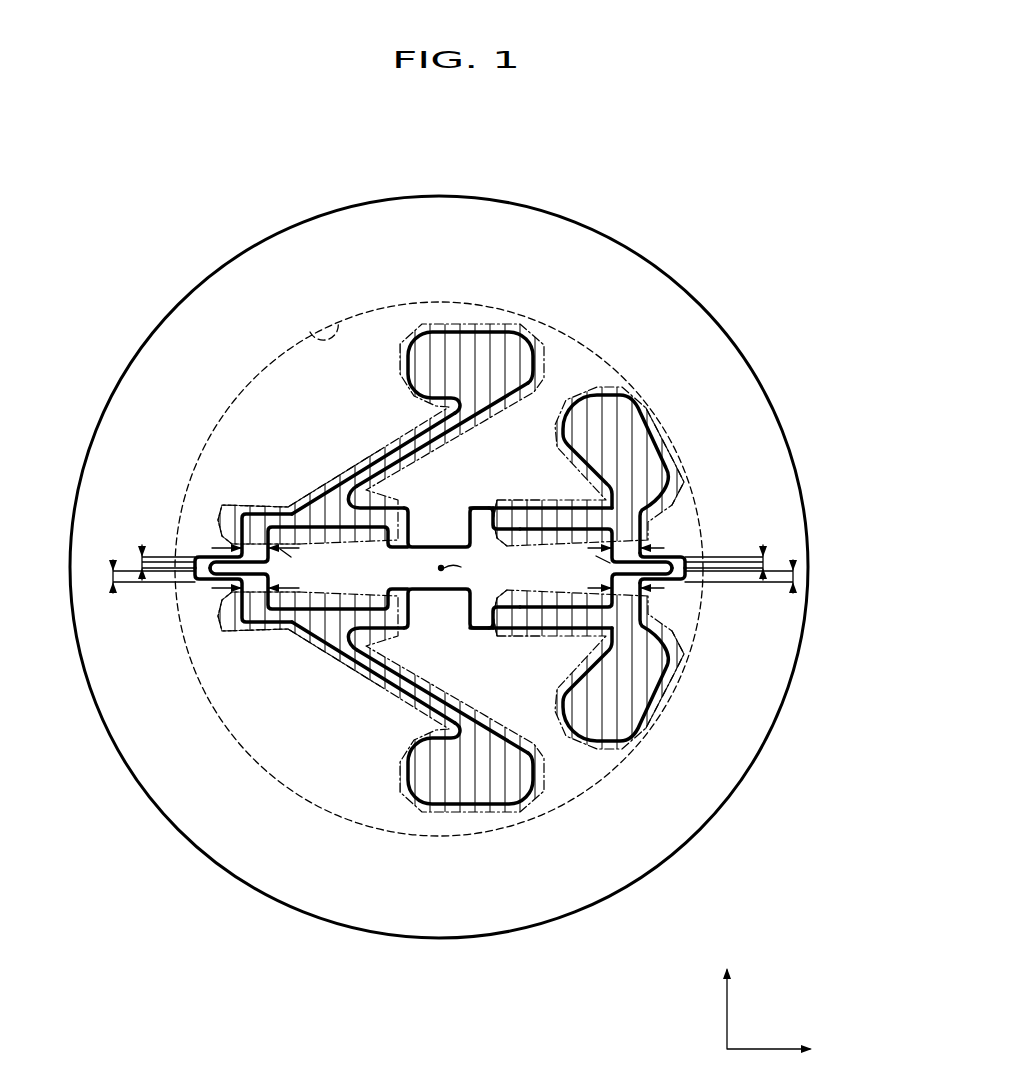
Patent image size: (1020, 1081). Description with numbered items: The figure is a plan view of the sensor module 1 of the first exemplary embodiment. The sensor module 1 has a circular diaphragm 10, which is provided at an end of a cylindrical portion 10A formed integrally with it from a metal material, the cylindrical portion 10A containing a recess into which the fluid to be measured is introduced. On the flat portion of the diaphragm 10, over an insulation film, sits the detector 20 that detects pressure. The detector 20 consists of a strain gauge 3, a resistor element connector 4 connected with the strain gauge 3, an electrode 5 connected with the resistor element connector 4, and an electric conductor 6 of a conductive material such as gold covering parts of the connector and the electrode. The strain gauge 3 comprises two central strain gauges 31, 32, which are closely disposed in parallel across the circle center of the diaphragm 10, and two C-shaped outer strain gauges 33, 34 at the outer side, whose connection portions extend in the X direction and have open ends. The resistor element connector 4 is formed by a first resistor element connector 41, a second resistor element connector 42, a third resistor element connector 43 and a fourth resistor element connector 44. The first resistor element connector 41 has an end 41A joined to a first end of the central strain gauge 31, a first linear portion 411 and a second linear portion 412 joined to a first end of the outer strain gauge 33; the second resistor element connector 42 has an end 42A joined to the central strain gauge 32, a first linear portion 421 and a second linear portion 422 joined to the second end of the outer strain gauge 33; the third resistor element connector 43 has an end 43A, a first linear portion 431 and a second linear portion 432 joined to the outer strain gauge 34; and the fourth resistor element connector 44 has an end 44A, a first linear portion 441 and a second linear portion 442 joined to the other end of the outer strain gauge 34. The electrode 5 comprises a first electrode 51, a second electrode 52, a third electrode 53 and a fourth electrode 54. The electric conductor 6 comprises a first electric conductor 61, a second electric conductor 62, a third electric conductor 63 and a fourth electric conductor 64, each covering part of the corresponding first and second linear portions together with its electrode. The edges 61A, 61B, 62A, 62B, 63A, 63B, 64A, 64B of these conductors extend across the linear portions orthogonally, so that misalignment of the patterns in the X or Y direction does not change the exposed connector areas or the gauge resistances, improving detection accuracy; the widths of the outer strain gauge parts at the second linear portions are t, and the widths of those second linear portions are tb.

The sensor module 1 is at (661, 170).
The strain gauge 3 is at (710, 591).
The resistor element connector 4 is at (357, 464).
The electrode 5 is at (625, 390).
The electric conductor 6 is at (413, 318).
The diaphragm 10 is at (243, 272).
The cylindrical portion 10A is at (310, 332).
The detector 20 is at (546, 300).
The central strain gauge 31 is at (440, 545).
The central strain gauge 32 is at (440, 592).
The outer strain gauge 33 is at (205, 560).
The outer strain gauge 34 is at (690, 578).
The first resistor element connector 41 is at (303, 490).
The end 41A is at (383, 537).
The first linear portion 411 is at (383, 508).
The second linear portion 412 is at (236, 540).
The second resistor element connector 42 is at (319, 692).
The end 42A is at (382, 598).
The first linear portion 421 is at (386, 628).
The second linear portion 422 is at (236, 596).
The third resistor element connector 43 is at (584, 762).
The end 43A is at (505, 605).
The first linear portion 431 is at (493, 606).
The second linear portion 432 is at (700, 590).
The fourth resistor element connector 44 is at (488, 500).
The end 44A is at (479, 496).
The first linear portion 441 is at (508, 532).
The second linear portion 442 is at (692, 546).
The first electrode 51 is at (432, 422).
The second electrode 52 is at (402, 692).
The third electrode 53 is at (647, 697).
The fourth electrode 54 is at (647, 443).
The first electric conductor 61 is at (492, 330).
The edge 61A is at (345, 482).
The edge 61B is at (258, 537).
The second electric conductor 62 is at (476, 815).
The edge 62A is at (318, 660).
The edge 62B is at (258, 600).
The third electric conductor 63 is at (615, 745).
The edge 63A is at (505, 648).
The edge 63B is at (695, 640).
The fourth electric conductor 64 is at (552, 405).
The edge 64A is at (504, 498).
The edge 64B is at (700, 502).